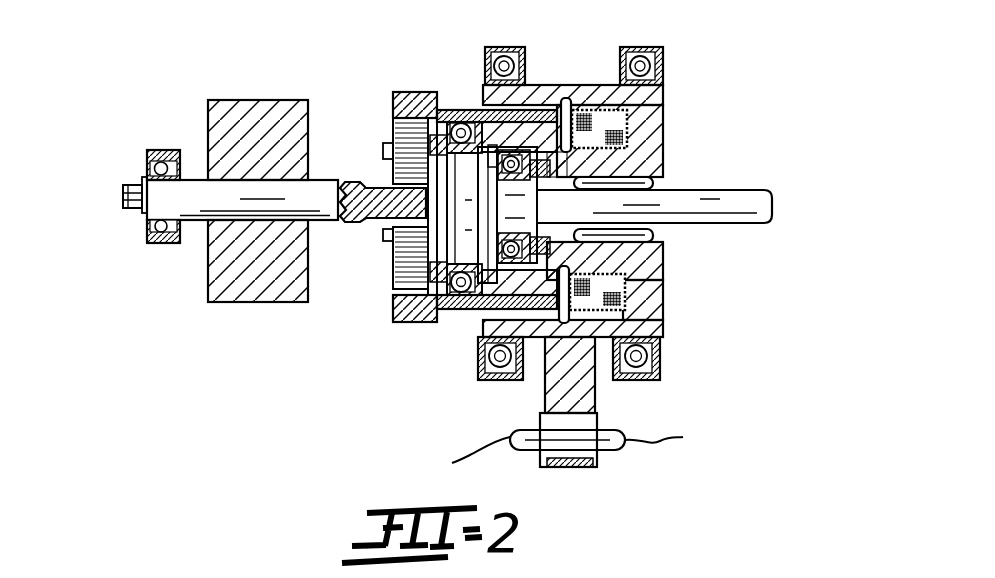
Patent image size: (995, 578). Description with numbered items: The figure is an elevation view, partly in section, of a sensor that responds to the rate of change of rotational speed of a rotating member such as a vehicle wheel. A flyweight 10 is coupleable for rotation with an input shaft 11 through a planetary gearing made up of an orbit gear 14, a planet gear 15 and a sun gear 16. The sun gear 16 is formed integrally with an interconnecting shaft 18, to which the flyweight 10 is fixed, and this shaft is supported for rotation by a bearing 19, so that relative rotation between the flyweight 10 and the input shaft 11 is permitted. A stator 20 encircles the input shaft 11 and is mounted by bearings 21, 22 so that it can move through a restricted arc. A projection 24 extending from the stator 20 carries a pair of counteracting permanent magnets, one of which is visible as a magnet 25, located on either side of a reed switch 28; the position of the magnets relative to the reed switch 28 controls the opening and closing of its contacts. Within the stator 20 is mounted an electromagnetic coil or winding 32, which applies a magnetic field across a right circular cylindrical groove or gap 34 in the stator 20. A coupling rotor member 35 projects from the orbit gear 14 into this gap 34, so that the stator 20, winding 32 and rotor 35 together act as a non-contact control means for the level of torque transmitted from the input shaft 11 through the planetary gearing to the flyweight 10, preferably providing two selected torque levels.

The flyweight 10 is at (268, 108).
The input shaft 11 is at (708, 197).
The orbit gear 14 is at (392, 288).
The planet gear 15 is at (407, 148).
The sun gear 16 is at (367, 178).
The interconnecting shaft 18 is at (326, 207).
The bearing 19 is at (167, 120).
The stator 20 is at (664, 108).
The bearing 21 is at (521, 47).
The bearing 22 is at (657, 47).
The projection 24 is at (542, 398).
The magnet 25 is at (580, 427).
The reed switch 28 is at (522, 440).
The electromagnetic coil or winding 32 is at (660, 118).
The groove or gap 34 is at (532, 108).
The coupling rotor member 35 is at (468, 306).